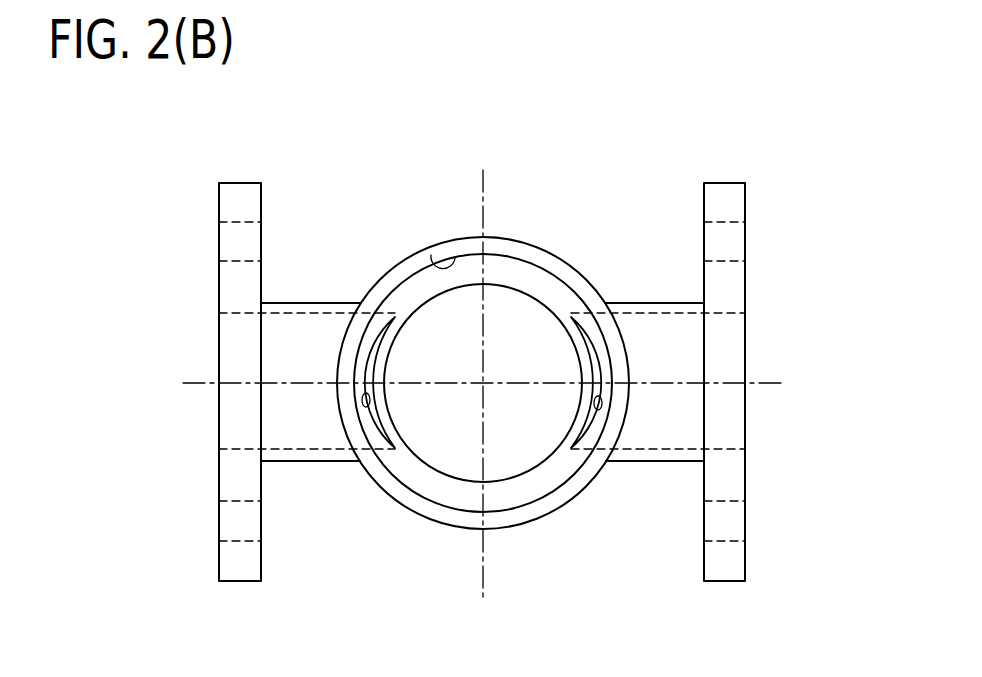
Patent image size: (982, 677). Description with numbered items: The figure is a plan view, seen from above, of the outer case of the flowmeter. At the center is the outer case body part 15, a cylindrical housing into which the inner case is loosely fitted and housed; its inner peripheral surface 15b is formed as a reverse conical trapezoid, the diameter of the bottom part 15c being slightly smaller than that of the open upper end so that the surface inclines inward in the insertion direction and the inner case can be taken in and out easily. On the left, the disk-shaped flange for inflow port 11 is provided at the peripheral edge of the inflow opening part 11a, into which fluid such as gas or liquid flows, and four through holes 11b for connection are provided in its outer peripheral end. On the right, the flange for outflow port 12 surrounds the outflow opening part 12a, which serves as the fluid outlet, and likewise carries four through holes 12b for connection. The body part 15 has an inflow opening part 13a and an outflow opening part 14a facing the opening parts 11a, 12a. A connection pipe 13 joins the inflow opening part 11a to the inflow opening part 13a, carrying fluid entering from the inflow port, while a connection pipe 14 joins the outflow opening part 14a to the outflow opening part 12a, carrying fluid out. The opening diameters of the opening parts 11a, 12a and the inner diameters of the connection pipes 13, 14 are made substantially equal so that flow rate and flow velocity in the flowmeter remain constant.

The flange for inflow port 11 is at (219, 196).
The inflow opening part 11a is at (240, 315).
The through holes for connection 11b is at (240, 224).
The flange for outflow port 12 is at (745, 197).
The outflow opening part 12a is at (724, 315).
The through holes for connection 12b is at (724, 223).
The connection pipe 13 is at (307, 462).
The inflow opening part 13a is at (364, 406).
The connection pipe 14 is at (656, 462).
The outflow opening part 14a is at (601, 409).
The outer case body part 15 is at (517, 252).
The inner peripheral surface 15b is at (428, 262).
The bottom part 15c is at (530, 322).